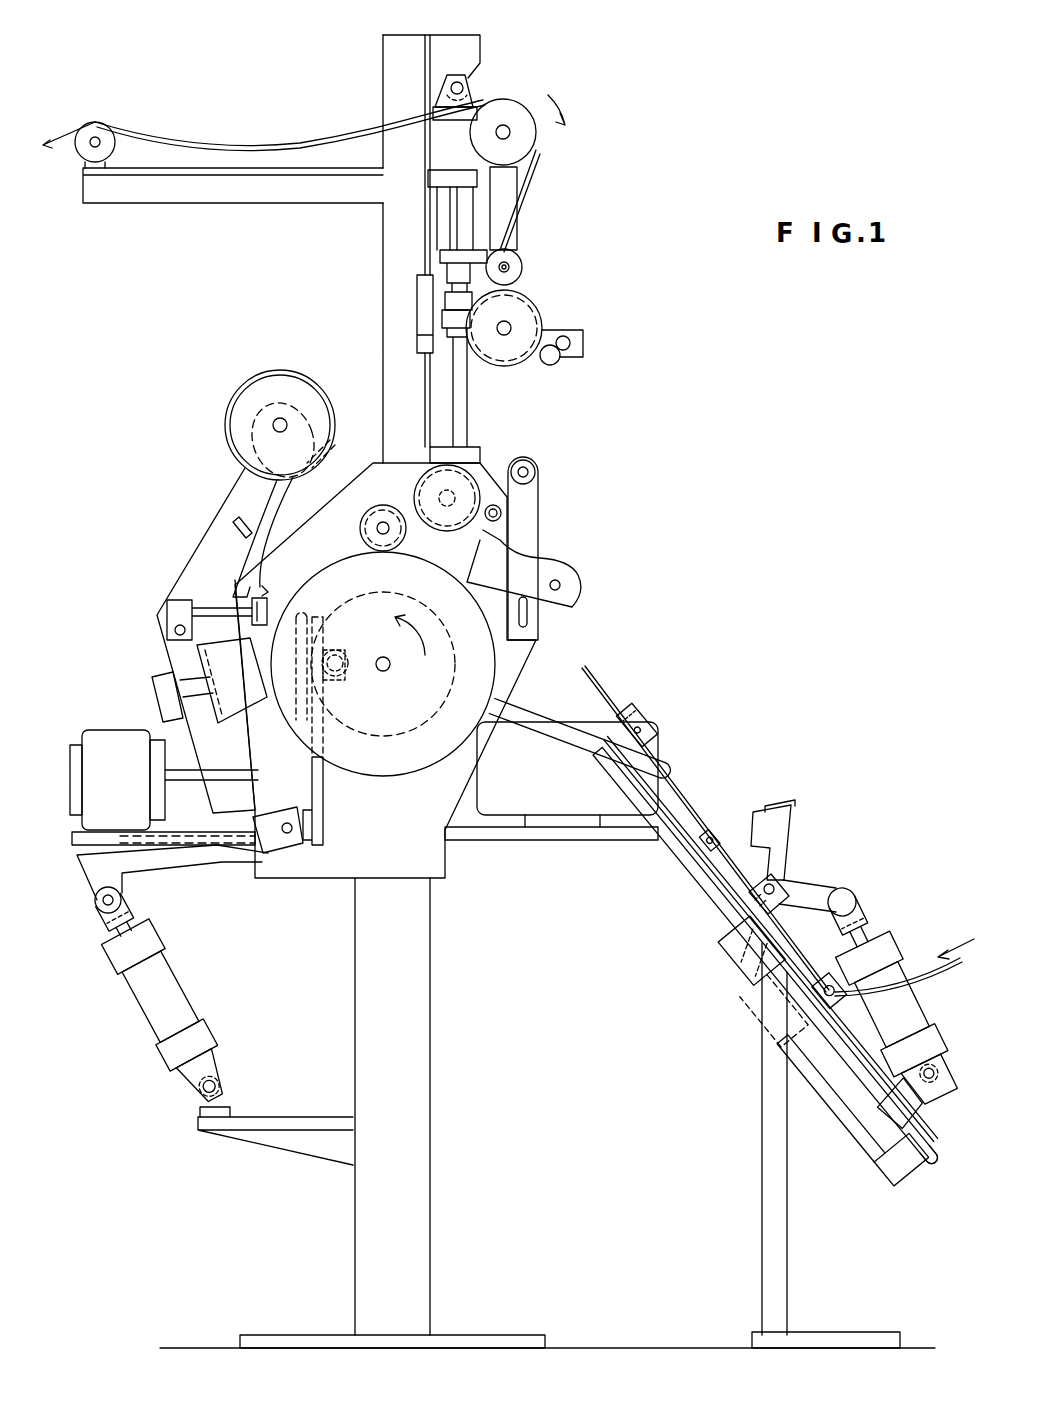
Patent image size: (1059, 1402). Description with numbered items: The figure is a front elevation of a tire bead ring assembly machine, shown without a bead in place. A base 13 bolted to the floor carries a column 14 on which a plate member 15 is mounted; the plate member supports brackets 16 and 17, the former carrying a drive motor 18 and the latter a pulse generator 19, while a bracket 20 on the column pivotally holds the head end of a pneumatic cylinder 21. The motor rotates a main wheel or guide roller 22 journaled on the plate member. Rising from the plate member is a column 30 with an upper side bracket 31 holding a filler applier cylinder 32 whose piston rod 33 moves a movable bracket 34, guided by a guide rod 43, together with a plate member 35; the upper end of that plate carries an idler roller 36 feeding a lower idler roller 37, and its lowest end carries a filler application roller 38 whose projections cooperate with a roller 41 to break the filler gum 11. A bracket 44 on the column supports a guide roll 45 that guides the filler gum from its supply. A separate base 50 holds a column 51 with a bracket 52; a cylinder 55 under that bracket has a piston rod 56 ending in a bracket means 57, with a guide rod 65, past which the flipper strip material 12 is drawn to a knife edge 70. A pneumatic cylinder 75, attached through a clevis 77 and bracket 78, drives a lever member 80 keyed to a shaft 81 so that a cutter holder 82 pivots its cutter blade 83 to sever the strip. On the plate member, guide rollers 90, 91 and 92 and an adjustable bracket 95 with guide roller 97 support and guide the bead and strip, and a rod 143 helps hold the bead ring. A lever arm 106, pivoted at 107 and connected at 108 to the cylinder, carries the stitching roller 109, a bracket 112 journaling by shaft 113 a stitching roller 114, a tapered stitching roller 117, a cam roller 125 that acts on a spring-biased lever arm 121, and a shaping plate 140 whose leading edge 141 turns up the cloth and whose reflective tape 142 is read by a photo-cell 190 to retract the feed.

The filler gum 11 is at (272, 140).
The flipper strip material 12 is at (600, 692).
The base 13 is at (480, 1342).
The column 14 is at (430, 1070).
The plate member 15 is at (445, 855).
The bracket 16 is at (75, 840).
The bracket 17 is at (620, 838).
The drive motor 18 is at (125, 779).
The pulse generator 19 is at (565, 782).
The bracket 20 is at (305, 1140).
The pneumatic cylinder 21 is at (160, 1012).
The main wheel or guide roller 22 is at (437, 700).
The column 30 is at (385, 270).
The upper side bracket 31 is at (483, 45).
The filler applier cylinder 32 is at (440, 143).
The piston rod 33 is at (460, 205).
The movable bracket 34 is at (440, 258).
The plate member or support member 35 is at (525, 232).
The idler roller 36 is at (532, 135).
The lower idler roller 37 is at (525, 267).
The filler application roller 38 is at (535, 320).
The roller 41 is at (563, 356).
The guide rod 43 is at (460, 415).
The bracket 44 is at (158, 196).
The guide roll 45 is at (96, 122).
The base 50 is at (835, 1340).
The column 51 is at (762, 1238).
The bracket 52 is at (935, 1170).
The cylinder 55 is at (850, 1110).
The piston rod 56 is at (683, 878).
The bracket means 57 is at (625, 722).
The guide rod 65 is at (718, 935).
The knife edge 70 is at (735, 815).
The pneumatic cylinder 75 is at (905, 1005).
The clevis 77 is at (930, 1062).
The bracket 78 is at (918, 1104).
The lever member 80 is at (800, 892).
The shaft 81 is at (778, 870).
The cutter holder 82 is at (790, 825).
The cutter blade 83 is at (765, 806).
The guide roller 90 is at (367, 515).
The second guide roller 91 is at (482, 465).
The first guide roller 92 is at (540, 492).
The adjustable bracket 95 is at (550, 572).
The guide roller 97 is at (560, 585).
The lever arm 106 is at (150, 860).
The pivot 107 is at (285, 835).
The pivot 108 is at (100, 905).
The stitching roller 109 is at (212, 405).
The bracket 112 is at (172, 616).
The shaft 113 is at (190, 595).
The stitching roller 114 is at (272, 576).
The tapered stitching roller 117 is at (220, 656).
The lever arm 121 is at (325, 795).
The cam roller 125 is at (347, 858).
The shaping plate 140 is at (270, 492).
The leading edge 141 is at (330, 442).
The reflective tape 142 is at (328, 385).
The rod 143 is at (510, 706).
The photo-cell 190 is at (420, 300).